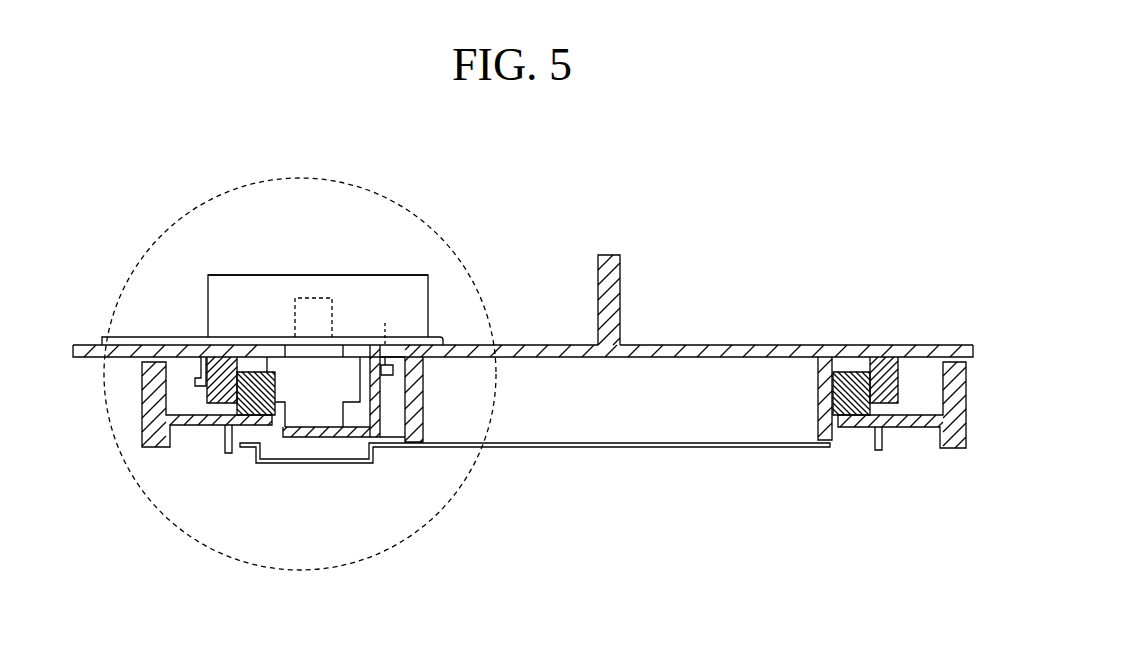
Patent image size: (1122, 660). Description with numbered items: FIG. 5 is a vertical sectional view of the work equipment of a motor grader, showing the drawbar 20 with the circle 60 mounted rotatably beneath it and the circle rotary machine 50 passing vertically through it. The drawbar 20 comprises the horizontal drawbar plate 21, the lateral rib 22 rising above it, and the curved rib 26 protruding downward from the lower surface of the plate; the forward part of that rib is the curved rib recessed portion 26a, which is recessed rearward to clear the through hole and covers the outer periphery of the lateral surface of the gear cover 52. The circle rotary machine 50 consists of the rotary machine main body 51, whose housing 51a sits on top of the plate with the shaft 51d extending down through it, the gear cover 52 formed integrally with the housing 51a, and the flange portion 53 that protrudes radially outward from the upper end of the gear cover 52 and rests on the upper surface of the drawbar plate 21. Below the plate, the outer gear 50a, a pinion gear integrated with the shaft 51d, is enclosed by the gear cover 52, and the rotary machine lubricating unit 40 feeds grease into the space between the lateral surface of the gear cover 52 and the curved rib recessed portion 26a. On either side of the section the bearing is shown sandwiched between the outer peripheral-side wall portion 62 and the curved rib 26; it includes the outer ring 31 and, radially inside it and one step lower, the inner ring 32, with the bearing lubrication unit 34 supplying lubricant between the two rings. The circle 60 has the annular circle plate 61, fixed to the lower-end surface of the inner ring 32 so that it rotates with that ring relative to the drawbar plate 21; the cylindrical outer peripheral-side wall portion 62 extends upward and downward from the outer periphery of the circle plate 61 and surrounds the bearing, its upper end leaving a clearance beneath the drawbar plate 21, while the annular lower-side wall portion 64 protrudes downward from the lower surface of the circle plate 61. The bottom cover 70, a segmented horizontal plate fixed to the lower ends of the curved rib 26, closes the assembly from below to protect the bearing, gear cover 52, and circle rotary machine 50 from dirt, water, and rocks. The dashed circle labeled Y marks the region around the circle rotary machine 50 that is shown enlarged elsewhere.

The drawbar 20 is at (790, 322).
The drawbar plate 21 is at (745, 345).
The lateral rib 22 is at (613, 278).
The curved rib 26 is at (822, 412).
The curved rib recessed portion 26a is at (420, 427).
The outer ring 31 is at (226, 374).
The inner ring 32 is at (252, 392).
The bearing lubrication unit 34 is at (197, 383).
The rotary machine lubricating unit 40 is at (395, 366).
The circle rotary machine 50 is at (472, 183).
The outer gear 50a is at (318, 387).
The rotary machine main body 51 is at (385, 266).
The housing 51a is at (323, 285).
The shaft 51d is at (325, 316).
The gear cover 52 is at (343, 432).
The flange portion 53 is at (410, 340).
The circle 60 is at (132, 393).
The circle plate 61 is at (188, 422).
The outer peripheral-side wall portion 62 is at (153, 436).
The lower-side wall portion 64 is at (227, 453).
The bottom cover 70 is at (690, 447).
The enlarged region Y is at (431, 524).